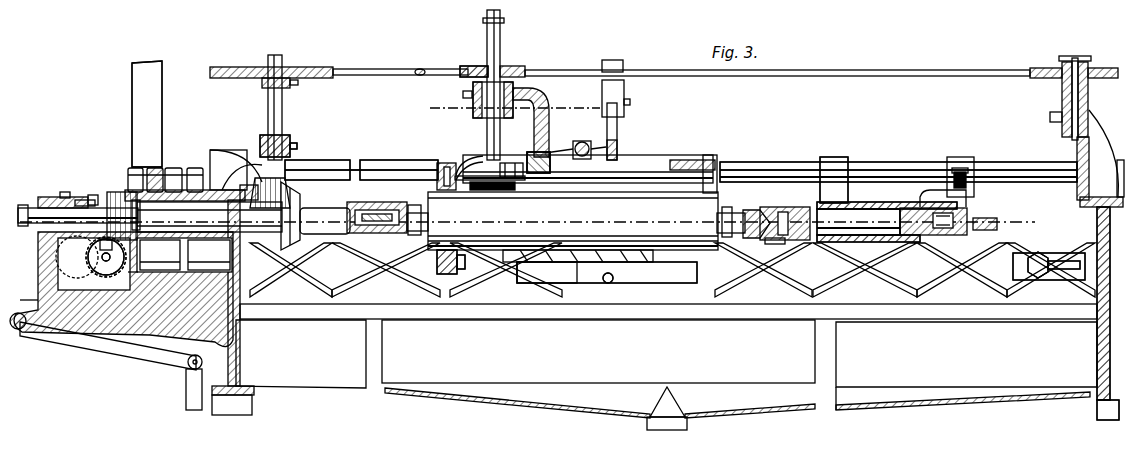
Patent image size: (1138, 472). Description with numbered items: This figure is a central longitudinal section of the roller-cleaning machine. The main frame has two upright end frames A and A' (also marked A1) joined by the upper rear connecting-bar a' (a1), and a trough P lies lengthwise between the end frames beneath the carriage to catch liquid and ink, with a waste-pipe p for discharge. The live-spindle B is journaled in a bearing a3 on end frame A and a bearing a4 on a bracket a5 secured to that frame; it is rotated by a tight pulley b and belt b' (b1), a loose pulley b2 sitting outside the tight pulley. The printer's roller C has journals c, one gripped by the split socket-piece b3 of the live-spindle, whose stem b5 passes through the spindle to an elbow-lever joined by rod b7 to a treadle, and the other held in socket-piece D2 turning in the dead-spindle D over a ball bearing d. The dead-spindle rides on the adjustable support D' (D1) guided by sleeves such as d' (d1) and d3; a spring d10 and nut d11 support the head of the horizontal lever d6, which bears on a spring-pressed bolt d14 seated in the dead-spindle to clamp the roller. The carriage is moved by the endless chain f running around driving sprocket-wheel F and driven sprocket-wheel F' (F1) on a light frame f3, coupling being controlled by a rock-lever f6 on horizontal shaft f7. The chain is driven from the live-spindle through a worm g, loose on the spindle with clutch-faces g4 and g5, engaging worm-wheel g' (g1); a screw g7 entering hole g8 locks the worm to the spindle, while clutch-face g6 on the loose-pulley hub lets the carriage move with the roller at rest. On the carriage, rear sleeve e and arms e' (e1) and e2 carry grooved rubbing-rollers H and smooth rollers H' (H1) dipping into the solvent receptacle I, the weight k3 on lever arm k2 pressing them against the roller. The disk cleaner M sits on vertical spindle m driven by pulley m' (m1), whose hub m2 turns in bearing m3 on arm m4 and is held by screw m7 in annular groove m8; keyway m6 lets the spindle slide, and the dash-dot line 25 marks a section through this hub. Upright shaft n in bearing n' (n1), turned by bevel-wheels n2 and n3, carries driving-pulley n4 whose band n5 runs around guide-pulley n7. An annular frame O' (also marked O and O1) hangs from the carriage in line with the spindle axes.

The end frame A is at (237, 311).
The end frame A' is at (1087, 272).
The frame right wall A1 is at (1097, 414).
The trough P is at (666, 369).
The waste-pipe p is at (680, 415).
The light frame f3 is at (858, 284).
The driven sprocket-wheel F' is at (1045, 304).
The bolt block F1 is at (1020, 290).
The bracket a5 is at (123, 289).
The driving sprocket-wheel F is at (106, 332).
The rod b7 is at (183, 389).
The traveling endless chain f is at (74, 282).
The worm-wheel g' is at (106, 311).
The gear g1 is at (106, 280).
The clutch-face g6 is at (132, 278).
The rock-lever f6 is at (19, 281).
The bearing a3 is at (185, 256).
The stem b5 is at (35, 207).
The bearing a4 is at (50, 197).
The clutch-face g5 is at (65, 192).
The screw g7 is at (93, 195).
The hole g8 is at (84, 200).
The clutch-face g4 is at (121, 192).
The worm g is at (106, 210).
The live-spindle B is at (209, 217).
The tight pulley b is at (165, 169).
The loose pulley b2 is at (160, 168).
The belt b' is at (147, 114).
The standard b1 is at (147, 114).
The upright shaft n is at (283, 107).
The horizontal driving-pulley n4 is at (271, 66).
The driving band n5 is at (400, 62).
The bearing n' is at (283, 139).
The nut n1 is at (286, 144).
The bevel-wheel n2 is at (265, 200).
The bevel-wheel n3 is at (300, 238).
The socket-piece b3 is at (375, 234).
The journals c is at (576, 215).
The bearing O is at (455, 165).
The annular frame O' is at (437, 274).
The bearing O1 is at (440, 275).
The printer's roller C is at (573, 221).
The disk-shaped cleaner M is at (493, 189).
The rubbing-rollers H is at (578, 233).
The rubbing-rollers H' is at (607, 285).
The gear housing H1 is at (627, 275).
The receptacle I is at (575, 283).
The spindle m is at (483, 85).
The pulley m' is at (498, 63).
The collar m1 is at (498, 63).
The annular groove m8 is at (525, 72).
The hub m2 is at (476, 114).
The screw m7 is at (463, 95).
The section line 25 is at (515, 108).
The bearing m3 is at (531, 94).
The arm m4 is at (549, 128).
The keyway m6 is at (508, 140).
The arm e' is at (551, 163).
The block e1 is at (572, 166).
The horizontal shaft f7 is at (584, 141).
The weight k3 is at (617, 76).
The upper arm k2 is at (618, 150).
The rear sleeve e is at (588, 169).
The arm e2 is at (700, 160).
The guide-pulley n7 is at (1046, 68).
The connecting-bar a' is at (681, 159).
The shaft a1 is at (762, 162).
The sleeve d' is at (834, 171).
The block d1 is at (834, 171).
The socket-piece D2 is at (756, 211).
The dead-spindle D is at (785, 213).
The ball bearing d is at (775, 254).
The spindle-support D' is at (892, 213).
The sleeve D1 is at (887, 213).
The sleeve d3 is at (960, 167).
The nut d11 is at (968, 172).
The spring d10 is at (948, 183).
The spring-pressed bolt d14 is at (955, 220).
The horizontal lever d6 is at (998, 222).